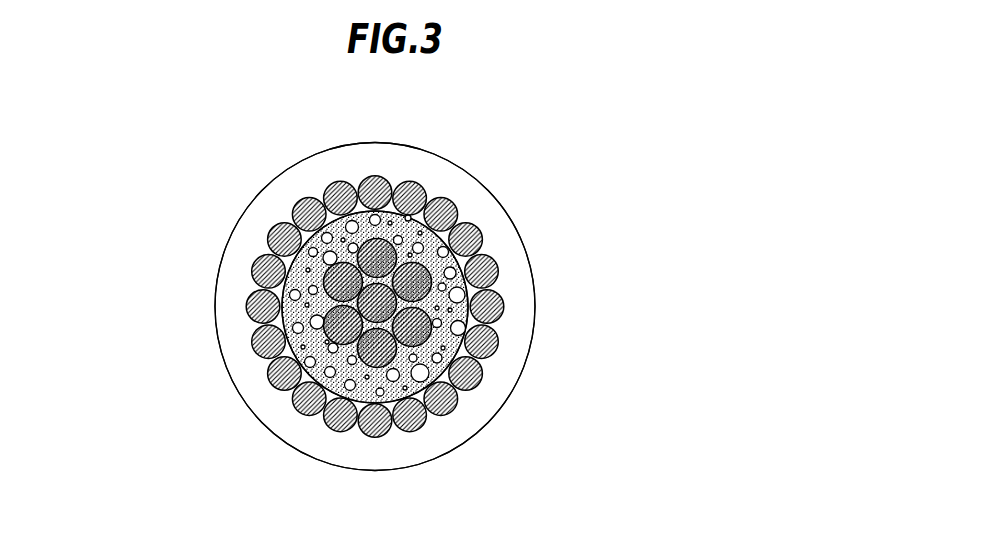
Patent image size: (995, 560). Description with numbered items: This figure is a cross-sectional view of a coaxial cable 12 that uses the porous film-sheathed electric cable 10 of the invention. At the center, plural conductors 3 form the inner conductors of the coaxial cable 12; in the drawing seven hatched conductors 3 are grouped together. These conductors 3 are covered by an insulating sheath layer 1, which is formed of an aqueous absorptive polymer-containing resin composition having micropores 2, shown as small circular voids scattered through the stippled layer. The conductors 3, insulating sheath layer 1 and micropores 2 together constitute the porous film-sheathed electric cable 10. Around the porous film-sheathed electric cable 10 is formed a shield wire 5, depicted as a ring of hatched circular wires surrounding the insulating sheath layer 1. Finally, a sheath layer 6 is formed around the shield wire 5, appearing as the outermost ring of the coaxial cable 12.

The coaxial cable 12 is at (303, 161).
The insulating sheath layer 1 is at (282, 227).
The conductor 3 is at (340, 283).
The porous film-sheathed electric cable 10 is at (427, 212).
The shield wire 5 is at (458, 200).
The micropores 2 is at (500, 265).
The sheath layer 6 is at (505, 388).